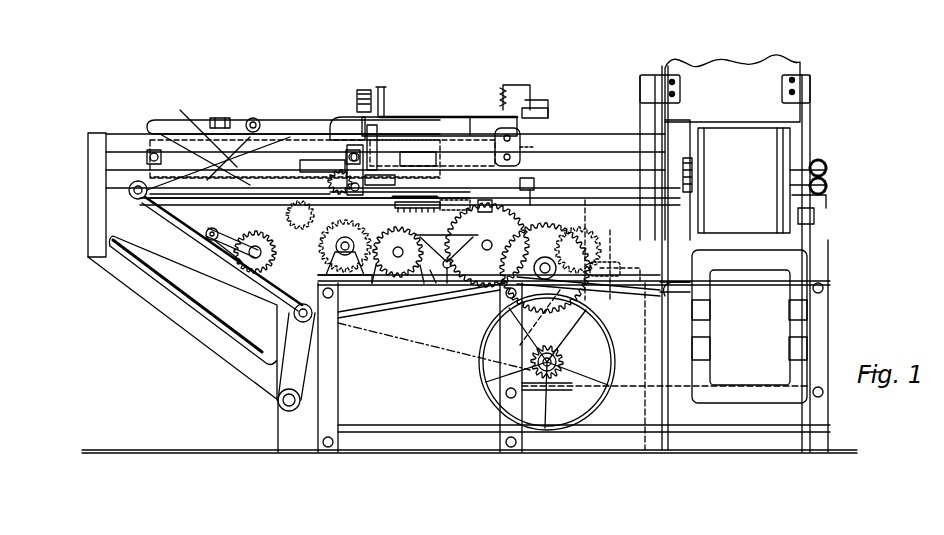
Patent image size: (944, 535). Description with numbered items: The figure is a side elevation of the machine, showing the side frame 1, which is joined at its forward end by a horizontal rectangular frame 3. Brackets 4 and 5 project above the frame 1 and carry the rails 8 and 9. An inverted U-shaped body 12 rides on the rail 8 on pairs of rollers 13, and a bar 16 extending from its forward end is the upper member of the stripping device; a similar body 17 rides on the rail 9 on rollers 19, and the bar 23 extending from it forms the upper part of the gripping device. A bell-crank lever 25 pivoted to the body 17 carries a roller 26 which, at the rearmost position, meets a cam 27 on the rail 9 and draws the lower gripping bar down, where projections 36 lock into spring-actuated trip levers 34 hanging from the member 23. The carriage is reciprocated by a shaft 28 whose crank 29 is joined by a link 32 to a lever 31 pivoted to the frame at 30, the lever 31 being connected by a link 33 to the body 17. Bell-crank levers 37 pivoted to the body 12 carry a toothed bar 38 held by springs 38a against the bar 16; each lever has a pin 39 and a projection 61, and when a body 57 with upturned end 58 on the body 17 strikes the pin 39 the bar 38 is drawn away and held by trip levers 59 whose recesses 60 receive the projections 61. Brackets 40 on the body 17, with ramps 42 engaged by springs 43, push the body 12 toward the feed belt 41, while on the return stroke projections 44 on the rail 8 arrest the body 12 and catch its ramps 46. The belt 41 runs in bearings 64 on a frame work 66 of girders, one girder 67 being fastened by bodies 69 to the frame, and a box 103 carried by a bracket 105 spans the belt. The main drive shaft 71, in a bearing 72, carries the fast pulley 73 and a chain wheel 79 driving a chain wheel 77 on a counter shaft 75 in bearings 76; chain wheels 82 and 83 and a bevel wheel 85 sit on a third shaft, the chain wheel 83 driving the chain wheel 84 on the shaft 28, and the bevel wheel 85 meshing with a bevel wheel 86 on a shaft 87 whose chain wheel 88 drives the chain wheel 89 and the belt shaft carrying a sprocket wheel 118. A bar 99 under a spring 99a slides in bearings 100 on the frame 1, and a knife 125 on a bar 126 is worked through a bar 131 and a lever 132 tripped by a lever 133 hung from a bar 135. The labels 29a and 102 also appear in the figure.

The frame 1 is at (170, 315).
The rectangular frame 3 is at (620, 188).
The bracket 4 is at (677, 180).
The bracket 5 is at (88, 172).
The rail 8 is at (625, 138).
The rail 9 is at (520, 172).
The body 12 is at (422, 117).
The rollers 13 is at (471, 142).
The bar 16 is at (538, 108).
The body 17 is at (160, 118).
The rollers 19 is at (132, 184).
The bar 23 is at (381, 112).
The bell-crank lever 25 is at (292, 118).
The roller 26 is at (208, 136).
The cam 27 is at (163, 131).
The shaft 28 is at (258, 262).
The crank 29 is at (206, 233).
The spring 29a is at (360, 92).
The pivot 30 is at (302, 403).
The lever 31 is at (312, 345).
The link 32 is at (216, 246).
The link 33 is at (147, 153).
The trip lever 34 is at (300, 165).
The projection 36 is at (336, 130).
The bell crank lever 37 is at (452, 128).
The toothed bar 38 is at (548, 117).
The spring 38a is at (510, 92).
The pin 39 is at (392, 180).
The bracket 40 is at (218, 117).
The feed belt 41 is at (744, 180).
The ramp 42 is at (251, 118).
The spring 43 is at (396, 115).
The projection 44 is at (346, 148).
The ramp 46 is at (375, 122).
The body 57 is at (417, 215).
The upturned end 58 is at (440, 193).
The trip lever 59 is at (433, 158).
The recess 60 is at (504, 147).
The projection 61 is at (471, 116).
The bearing 64 is at (827, 169).
The frame work 66 is at (338, 393).
The girder 67 is at (815, 216).
The body 69 is at (712, 350).
The main drive shaft 71 is at (572, 386).
The bearing 72 is at (534, 368).
The fast pulley 73 is at (482, 380).
The counter shaft 75 is at (398, 276).
The bearing 76 is at (326, 262).
The chain wheel 77 is at (425, 280).
The chain wheel 79 is at (562, 362).
The chain wheel 82 is at (468, 308).
The chain wheel 83 is at (487, 245).
The chain wheel 84 is at (187, 296).
The bevel wheel 85 is at (545, 258).
The bevel wheel 86 is at (580, 250).
The shaft 87 is at (620, 255).
The chain wheel 88 is at (712, 322).
The chain wheel 89 is at (695, 182).
The bar 99 is at (255, 244).
The spring 99a is at (457, 216).
The bearing 100 is at (212, 230).
The bracket 102 is at (640, 88).
The box-like structure 103 is at (732, 147).
The bracket 105 is at (812, 86).
The sprocket wheel 118 is at (827, 188).
The knife 125 is at (534, 180).
The bar 126 is at (540, 194).
The bar 131 is at (453, 271).
The lever 132 is at (446, 253).
The lever 133 is at (330, 234).
The bar 135 is at (162, 212).